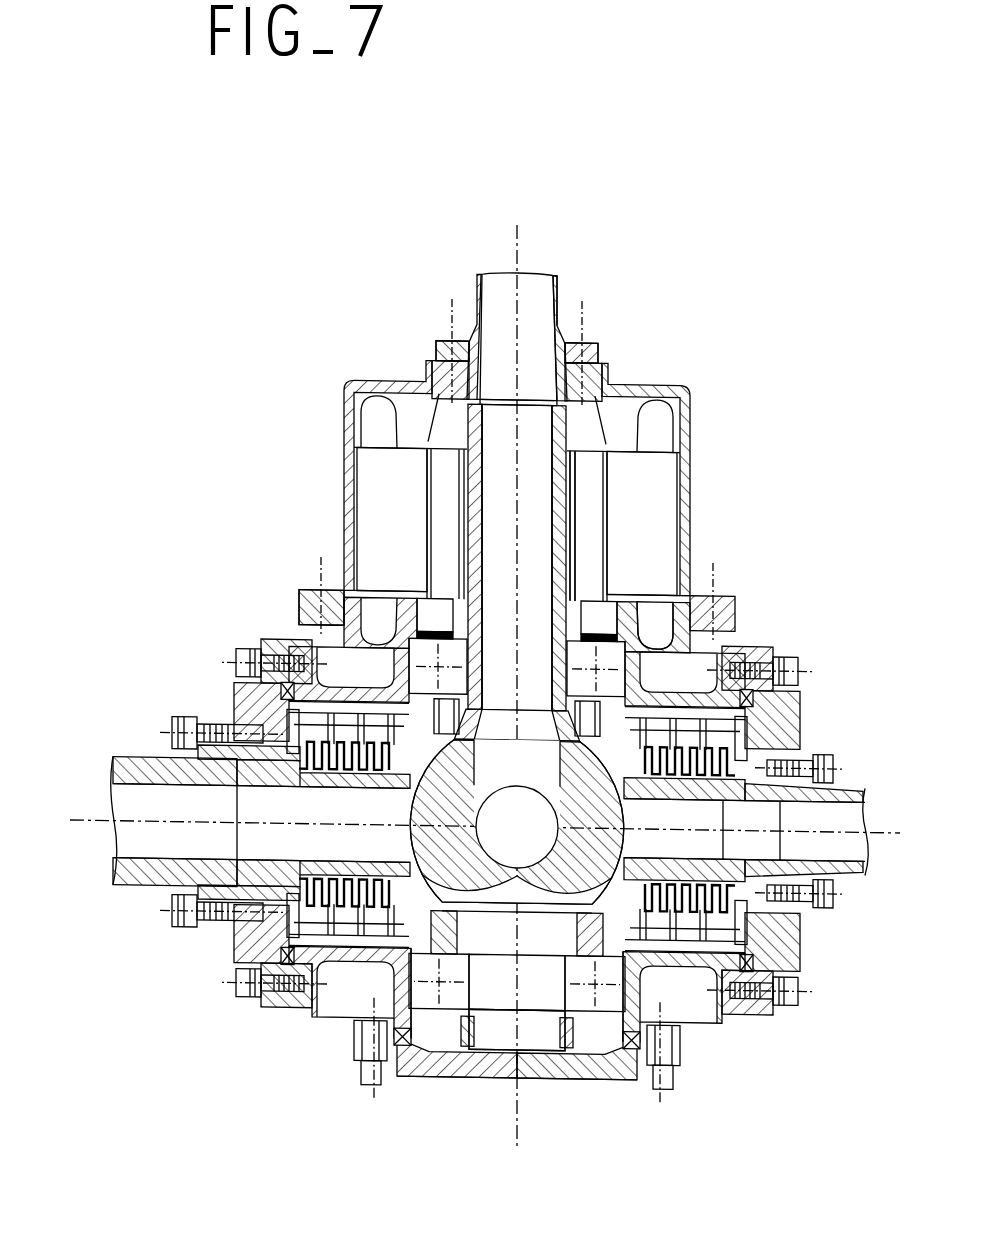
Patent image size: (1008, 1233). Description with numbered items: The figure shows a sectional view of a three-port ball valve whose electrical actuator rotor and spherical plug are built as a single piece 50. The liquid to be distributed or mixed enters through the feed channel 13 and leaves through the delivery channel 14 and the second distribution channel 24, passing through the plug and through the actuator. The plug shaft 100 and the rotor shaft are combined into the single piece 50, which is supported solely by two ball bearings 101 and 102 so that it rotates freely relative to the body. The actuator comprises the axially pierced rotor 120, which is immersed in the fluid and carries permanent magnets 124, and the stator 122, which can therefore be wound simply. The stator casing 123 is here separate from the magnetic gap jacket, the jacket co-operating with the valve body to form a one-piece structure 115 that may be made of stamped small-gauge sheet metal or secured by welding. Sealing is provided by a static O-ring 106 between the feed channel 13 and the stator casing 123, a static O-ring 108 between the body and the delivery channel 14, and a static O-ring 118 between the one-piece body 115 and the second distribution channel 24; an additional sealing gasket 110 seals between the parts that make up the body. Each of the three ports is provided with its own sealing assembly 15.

The feed channel 13 is at (565, 282).
The delivery channel 14 is at (133, 770).
The sealing assembly 15 is at (276, 940).
The second distribution channel 24 is at (826, 800).
The single piece 50 is at (608, 843).
The shaft 100 is at (491, 1038).
The ball bearing 101 is at (607, 1000).
The ball bearing 102 is at (660, 605).
The static sealing O-ring 106 is at (583, 343).
The static sealing O-ring 108 is at (172, 872).
The additional sealing gasket 110 is at (399, 1076).
The one-piece structure 115 is at (438, 345).
The static O-ring 118 is at (830, 868).
The rotor 120 is at (440, 455).
The stator 122 is at (673, 476).
The stator casing 123 is at (323, 582).
The permanent magnets 124 is at (588, 512).